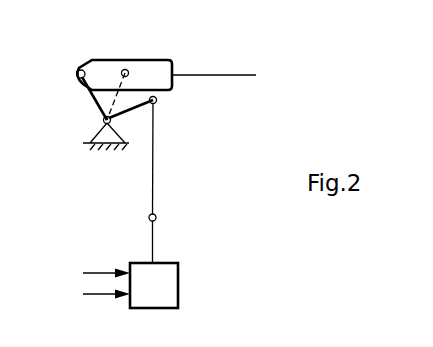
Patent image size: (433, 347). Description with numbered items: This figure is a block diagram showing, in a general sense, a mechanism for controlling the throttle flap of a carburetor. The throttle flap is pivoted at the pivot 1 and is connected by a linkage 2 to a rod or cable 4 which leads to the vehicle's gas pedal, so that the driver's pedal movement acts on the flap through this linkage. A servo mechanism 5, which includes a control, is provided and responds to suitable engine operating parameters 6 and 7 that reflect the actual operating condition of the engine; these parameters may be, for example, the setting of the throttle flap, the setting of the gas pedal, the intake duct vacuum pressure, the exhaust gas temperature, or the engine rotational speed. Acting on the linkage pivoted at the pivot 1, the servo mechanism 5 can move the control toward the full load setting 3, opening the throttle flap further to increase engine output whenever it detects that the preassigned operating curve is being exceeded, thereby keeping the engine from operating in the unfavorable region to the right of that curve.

The pivot 1 is at (103, 120).
The linkage 2 is at (78, 70).
The full load setting 3 is at (126, 69).
The rod or cable 4 is at (206, 74).
The servo mechanism 5 is at (160, 297).
The engine operating parameter 6 is at (92, 273).
The engine operating parameter 7 is at (92, 294).